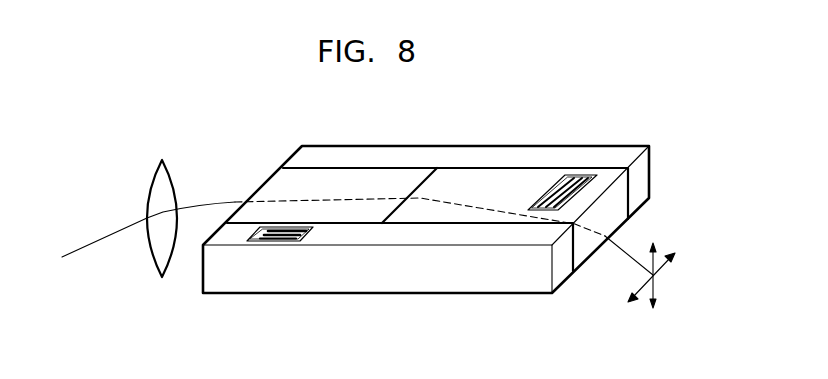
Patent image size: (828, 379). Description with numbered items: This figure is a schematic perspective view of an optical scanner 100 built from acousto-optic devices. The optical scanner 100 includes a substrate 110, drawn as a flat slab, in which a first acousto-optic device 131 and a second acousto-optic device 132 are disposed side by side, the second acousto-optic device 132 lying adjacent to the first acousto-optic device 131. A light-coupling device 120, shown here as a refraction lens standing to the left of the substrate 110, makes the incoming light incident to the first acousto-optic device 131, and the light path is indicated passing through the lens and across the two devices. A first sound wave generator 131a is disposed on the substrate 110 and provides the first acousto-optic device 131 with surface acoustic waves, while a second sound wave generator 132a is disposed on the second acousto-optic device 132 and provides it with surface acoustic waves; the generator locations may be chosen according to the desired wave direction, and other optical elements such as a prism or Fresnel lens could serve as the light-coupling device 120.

The optical scanner 100 is at (410, 351).
The substrate 110 is at (460, 280).
The light-coupling device 120 is at (162, 278).
The first acousto-optic device 131 is at (332, 219).
The first sound wave generator 131a is at (302, 242).
The second acousto-optic device 132 is at (505, 188).
The second sound wave generator 132a is at (583, 176).